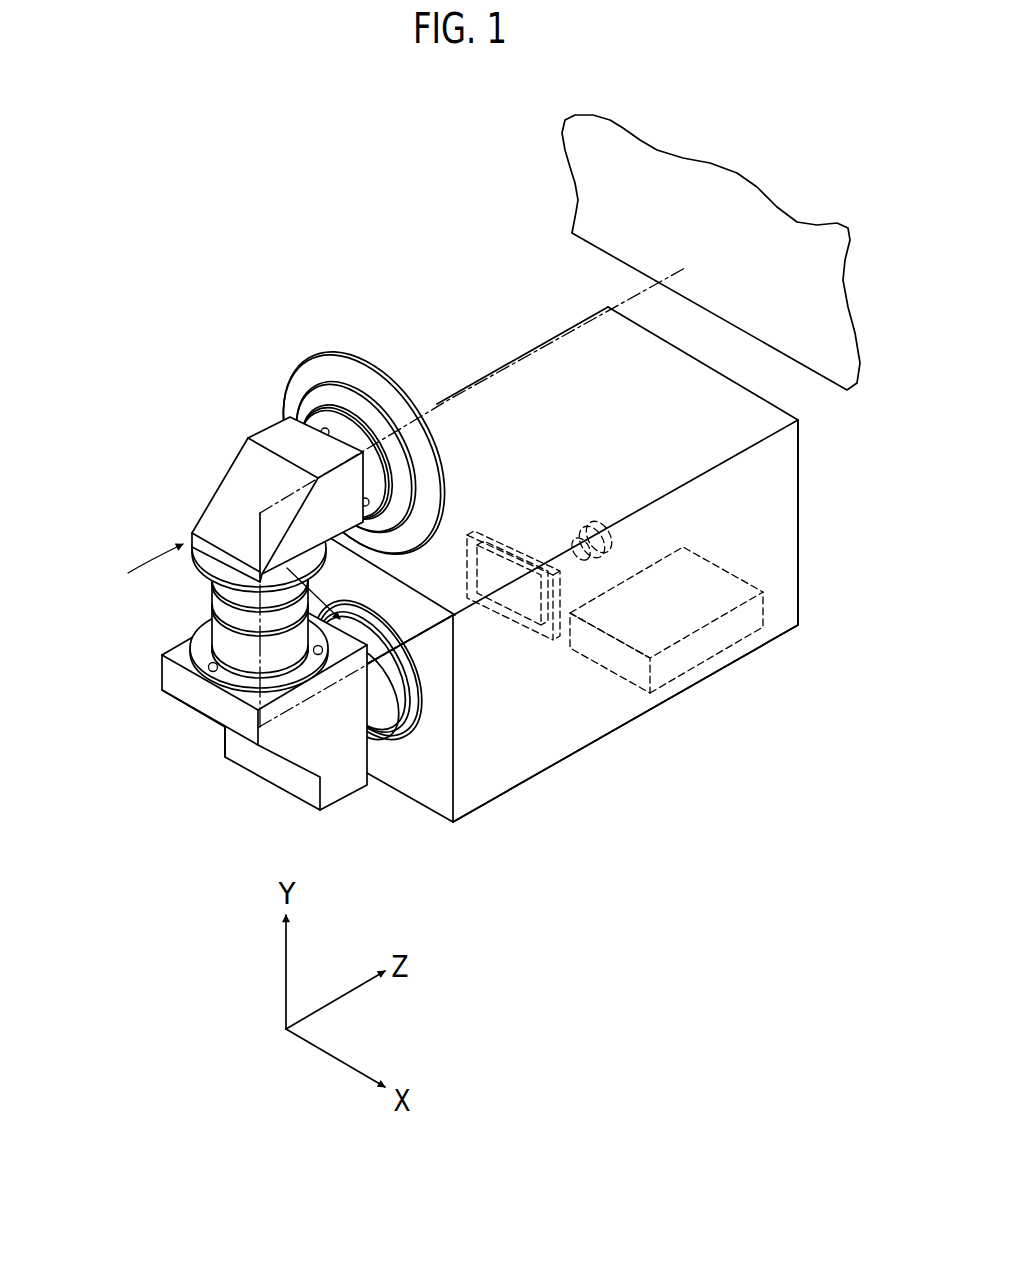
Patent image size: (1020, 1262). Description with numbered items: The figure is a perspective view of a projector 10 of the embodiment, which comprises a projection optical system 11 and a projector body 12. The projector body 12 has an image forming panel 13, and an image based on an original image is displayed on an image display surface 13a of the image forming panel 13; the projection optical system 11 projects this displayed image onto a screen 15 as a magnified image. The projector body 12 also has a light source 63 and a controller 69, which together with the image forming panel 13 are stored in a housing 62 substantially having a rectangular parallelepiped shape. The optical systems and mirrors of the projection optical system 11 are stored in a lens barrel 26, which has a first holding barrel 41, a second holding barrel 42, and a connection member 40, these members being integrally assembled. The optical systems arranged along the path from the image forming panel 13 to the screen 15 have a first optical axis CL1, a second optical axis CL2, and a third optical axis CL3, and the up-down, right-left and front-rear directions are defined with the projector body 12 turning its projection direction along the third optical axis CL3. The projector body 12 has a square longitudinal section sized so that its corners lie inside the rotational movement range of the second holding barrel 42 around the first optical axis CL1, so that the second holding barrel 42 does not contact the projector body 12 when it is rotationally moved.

The projector 10 is at (220, 275).
The projection optical system 11 is at (328, 350).
The projector body 12 is at (560, 777).
The image forming panel 13 is at (478, 527).
The image display surface 13a is at (488, 545).
The screen 15 is at (682, 157).
The lens barrel 26 is at (246, 498).
The connection member 40 is at (378, 742).
The first holding barrel 41 is at (415, 740).
The second holding barrel 42 is at (178, 678).
The housing 62 is at (604, 727).
The light source 63 is at (571, 518).
The controller 69 is at (709, 642).
The first optical axis CL1 is at (445, 628).
The second optical axis CL2 is at (260, 657).
The third optical axis CL3 is at (450, 397).